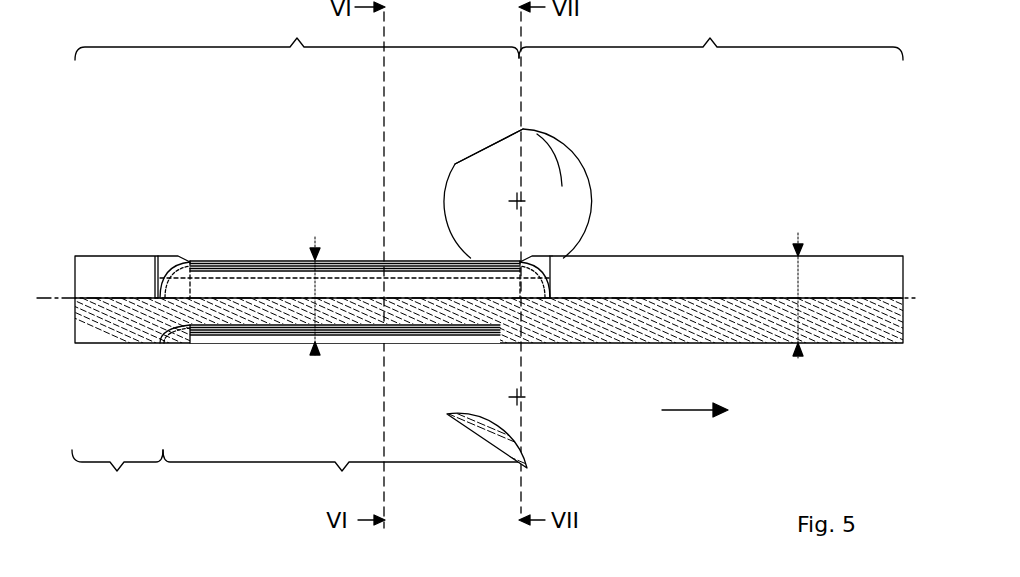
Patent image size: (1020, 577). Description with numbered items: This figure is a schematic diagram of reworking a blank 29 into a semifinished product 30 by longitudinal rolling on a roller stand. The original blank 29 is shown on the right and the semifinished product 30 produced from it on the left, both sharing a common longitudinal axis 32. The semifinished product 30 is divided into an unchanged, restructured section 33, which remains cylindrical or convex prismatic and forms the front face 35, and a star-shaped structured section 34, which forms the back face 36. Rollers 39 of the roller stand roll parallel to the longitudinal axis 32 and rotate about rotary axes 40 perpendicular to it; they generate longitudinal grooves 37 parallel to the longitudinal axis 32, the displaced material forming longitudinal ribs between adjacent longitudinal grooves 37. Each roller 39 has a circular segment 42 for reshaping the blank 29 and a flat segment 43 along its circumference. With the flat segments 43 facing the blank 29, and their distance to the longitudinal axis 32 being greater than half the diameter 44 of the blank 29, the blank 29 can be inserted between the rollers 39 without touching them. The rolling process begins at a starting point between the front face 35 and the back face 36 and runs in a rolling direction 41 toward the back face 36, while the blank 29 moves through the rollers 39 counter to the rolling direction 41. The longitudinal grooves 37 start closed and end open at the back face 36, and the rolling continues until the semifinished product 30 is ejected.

The blank 29 is at (711, 30).
The semifinished product 30 is at (297, 30).
The longitudinal axis 32 is at (52, 286).
The restructured section 33 is at (117, 479).
The star-shaped structured section 34 is at (342, 479).
The front face 35 is at (90, 278).
The back face 36 is at (890, 268).
The longitudinal grooves 37 is at (258, 283).
The rollers 39 is at (562, 186).
The rotary axes 40 is at (516, 196).
The rolling direction 41 is at (700, 412).
The circular segment 42 is at (586, 200).
The flat segment 43 is at (462, 158).
The diameter 44 is at (797, 258).